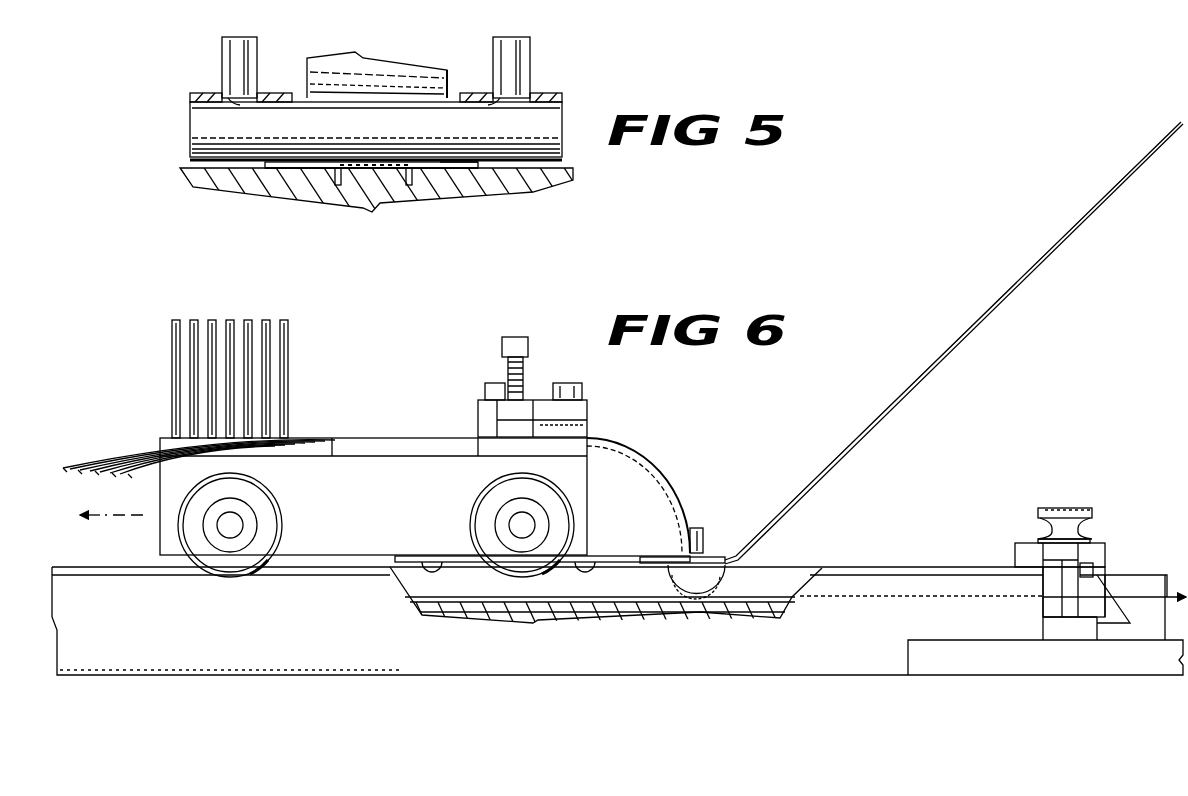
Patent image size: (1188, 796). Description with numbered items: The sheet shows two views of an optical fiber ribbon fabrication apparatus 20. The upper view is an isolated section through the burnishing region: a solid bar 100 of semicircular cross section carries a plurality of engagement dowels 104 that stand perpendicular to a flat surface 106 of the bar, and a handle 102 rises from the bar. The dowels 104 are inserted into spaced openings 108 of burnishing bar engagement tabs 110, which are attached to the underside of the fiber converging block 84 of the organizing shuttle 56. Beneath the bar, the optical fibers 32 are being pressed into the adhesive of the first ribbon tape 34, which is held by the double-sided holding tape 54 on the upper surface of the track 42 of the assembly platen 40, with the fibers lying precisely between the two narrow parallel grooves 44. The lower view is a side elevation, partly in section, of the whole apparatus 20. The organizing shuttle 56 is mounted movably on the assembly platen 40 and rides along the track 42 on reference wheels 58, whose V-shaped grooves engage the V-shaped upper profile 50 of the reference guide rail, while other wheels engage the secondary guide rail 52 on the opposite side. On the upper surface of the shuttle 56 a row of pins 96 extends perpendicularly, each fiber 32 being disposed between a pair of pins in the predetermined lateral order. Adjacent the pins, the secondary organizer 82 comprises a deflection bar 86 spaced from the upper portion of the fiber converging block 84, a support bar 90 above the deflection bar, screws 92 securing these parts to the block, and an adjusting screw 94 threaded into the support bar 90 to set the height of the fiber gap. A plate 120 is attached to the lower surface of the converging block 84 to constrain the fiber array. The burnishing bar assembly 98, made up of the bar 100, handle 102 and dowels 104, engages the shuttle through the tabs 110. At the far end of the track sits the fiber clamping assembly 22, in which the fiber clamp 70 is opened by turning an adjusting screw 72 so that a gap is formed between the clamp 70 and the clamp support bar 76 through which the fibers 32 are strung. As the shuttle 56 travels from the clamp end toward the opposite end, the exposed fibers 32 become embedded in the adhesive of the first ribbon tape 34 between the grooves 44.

In FIG. 6, the optical fiber ribbon fabrication apparatus 20 is at (726, 416).
In FIG. 6, the fiber clamping assembly 22 is at (1083, 503).
In FIG. 5, the optical fibers 32 is at (375, 170).
In FIG. 6, the optical fibers 32 is at (98, 456).
In FIG. 5, the first ribbon tape 34 is at (445, 169).
In FIG. 6, the first ribbon tape 34 is at (410, 592).
In FIG. 6, the assembly platen 40 is at (238, 668).
In FIG. 5, the track 42 is at (240, 192).
In FIG. 5, the grooves 44 is at (338, 186).
In FIG. 6, the grooves 44 is at (462, 608).
In FIG. 6, the V-shaped upper cross section profile 50 is at (900, 568).
In FIG. 6, the secondary guide rail 52 is at (800, 568).
In FIG. 5, the holding tape 54 is at (290, 170).
In FIG. 6, the holding tape 54 is at (590, 606).
In FIG. 6, the organizing shuttle 56 is at (646, 456).
In FIG. 6, the reference wheels 58 is at (264, 497).
In FIG. 6, the fiber clamp 70 is at (1048, 567).
In FIG. 6, the adjusting screw 72 is at (1076, 531).
In FIG. 6, the clamp support bar 76 is at (1043, 602).
In FIG. 6, the secondary organizer 82 is at (589, 430).
In FIG. 6, the fiber converging block 84 is at (668, 489).
In FIG. 6, the deflection bar 86 is at (480, 428).
In FIG. 6, the support bar 90 is at (548, 399).
In FIG. 6, the screws 92 is at (569, 383).
In FIG. 6, the adjusting screw 94 is at (518, 338).
In FIG. 6, the pins 96 is at (268, 318).
In FIG. 6, the burnishing bar assembly 98 is at (820, 484).
In FIG. 5, the solid bar 100 is at (192, 117).
In FIG. 6, the solid bar 100 is at (695, 590).
In FIG. 5, the handle 102 is at (372, 62).
In FIG. 6, the handle 102 is at (849, 446).
In FIG. 5, the engagement dowels 104 is at (232, 40).
In FIG. 6, the engagement dowels 104 is at (698, 527).
In FIG. 5, the flat surface 106 is at (441, 90).
In FIG. 5, the openings 108 is at (248, 99).
In FIG. 5, the burnishing bar engagement tabs 110 is at (202, 93).
In FIG. 6, the burnishing bar engagement tabs 110 is at (708, 556).
In FIG. 6, the plate 120 is at (648, 553).